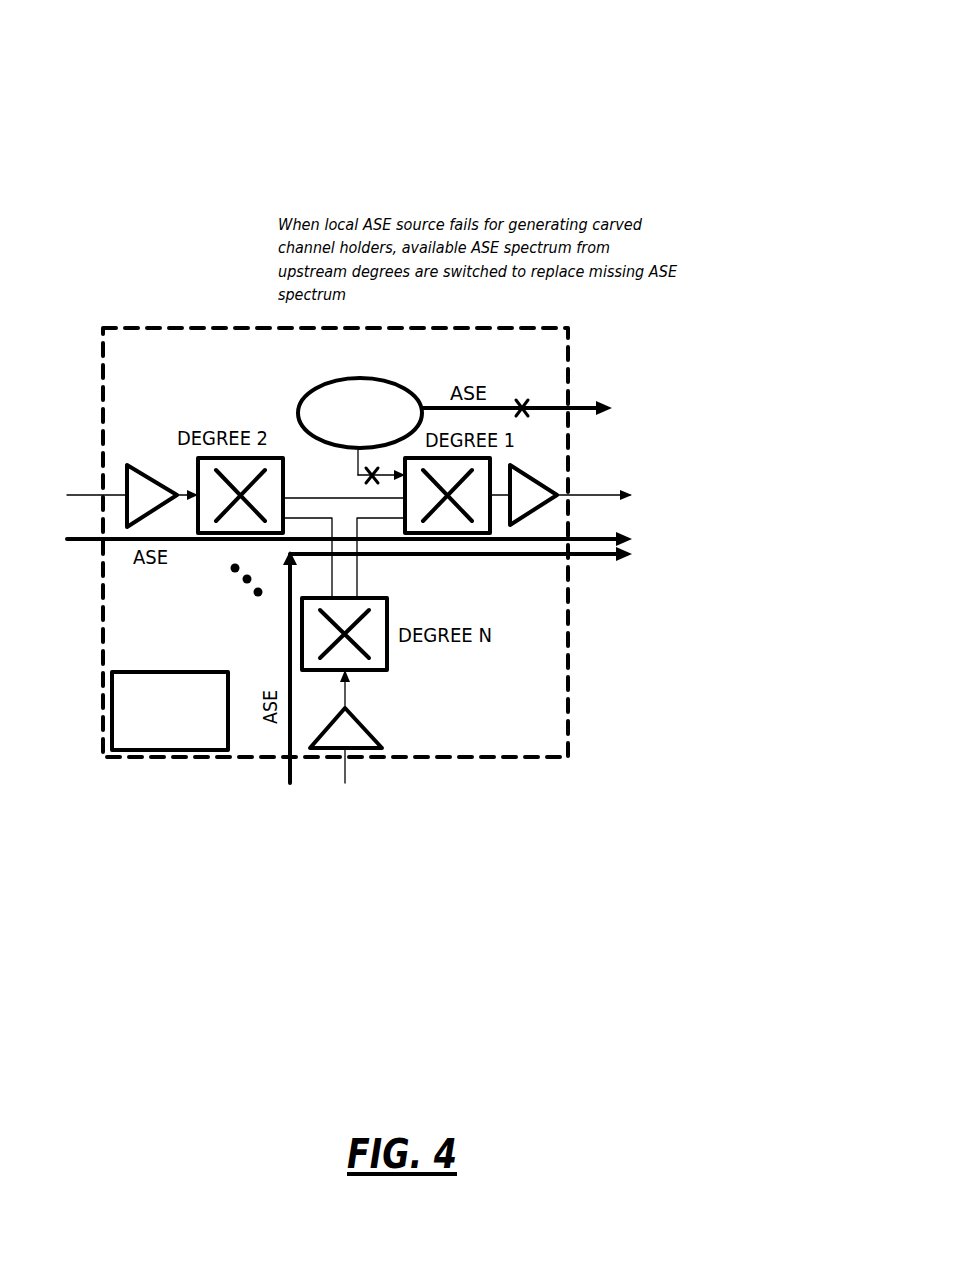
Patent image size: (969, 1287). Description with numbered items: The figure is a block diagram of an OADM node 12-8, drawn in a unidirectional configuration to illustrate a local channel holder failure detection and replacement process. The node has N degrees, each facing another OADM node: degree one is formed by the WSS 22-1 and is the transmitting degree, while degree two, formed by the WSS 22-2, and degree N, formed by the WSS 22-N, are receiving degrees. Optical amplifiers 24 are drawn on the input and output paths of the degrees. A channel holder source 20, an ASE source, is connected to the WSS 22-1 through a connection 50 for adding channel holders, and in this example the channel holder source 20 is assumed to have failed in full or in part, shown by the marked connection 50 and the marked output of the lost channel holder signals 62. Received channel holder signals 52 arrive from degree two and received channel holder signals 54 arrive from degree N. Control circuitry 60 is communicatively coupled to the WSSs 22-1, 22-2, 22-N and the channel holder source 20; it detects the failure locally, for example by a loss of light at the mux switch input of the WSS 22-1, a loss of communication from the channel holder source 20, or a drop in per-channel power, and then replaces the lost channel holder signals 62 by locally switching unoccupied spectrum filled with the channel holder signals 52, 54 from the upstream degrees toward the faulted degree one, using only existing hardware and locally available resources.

The OADM node 12-8 is at (389, 82).
The channel holder source 20 is at (415, 388).
The WSS 22-1 is at (470, 533).
The WSS 22-2 is at (214, 533).
The WSS 22-N is at (387, 652).
The optical amplifier 24 is at (125, 480).
The ASE source connection to degree 1 50 is at (358, 474).
The received channel holder signals 52 is at (95, 539).
The received channel holder signals 54 is at (290, 618).
The control circuitry 60 is at (112, 717).
The lost channel holder signals 62 is at (588, 402).